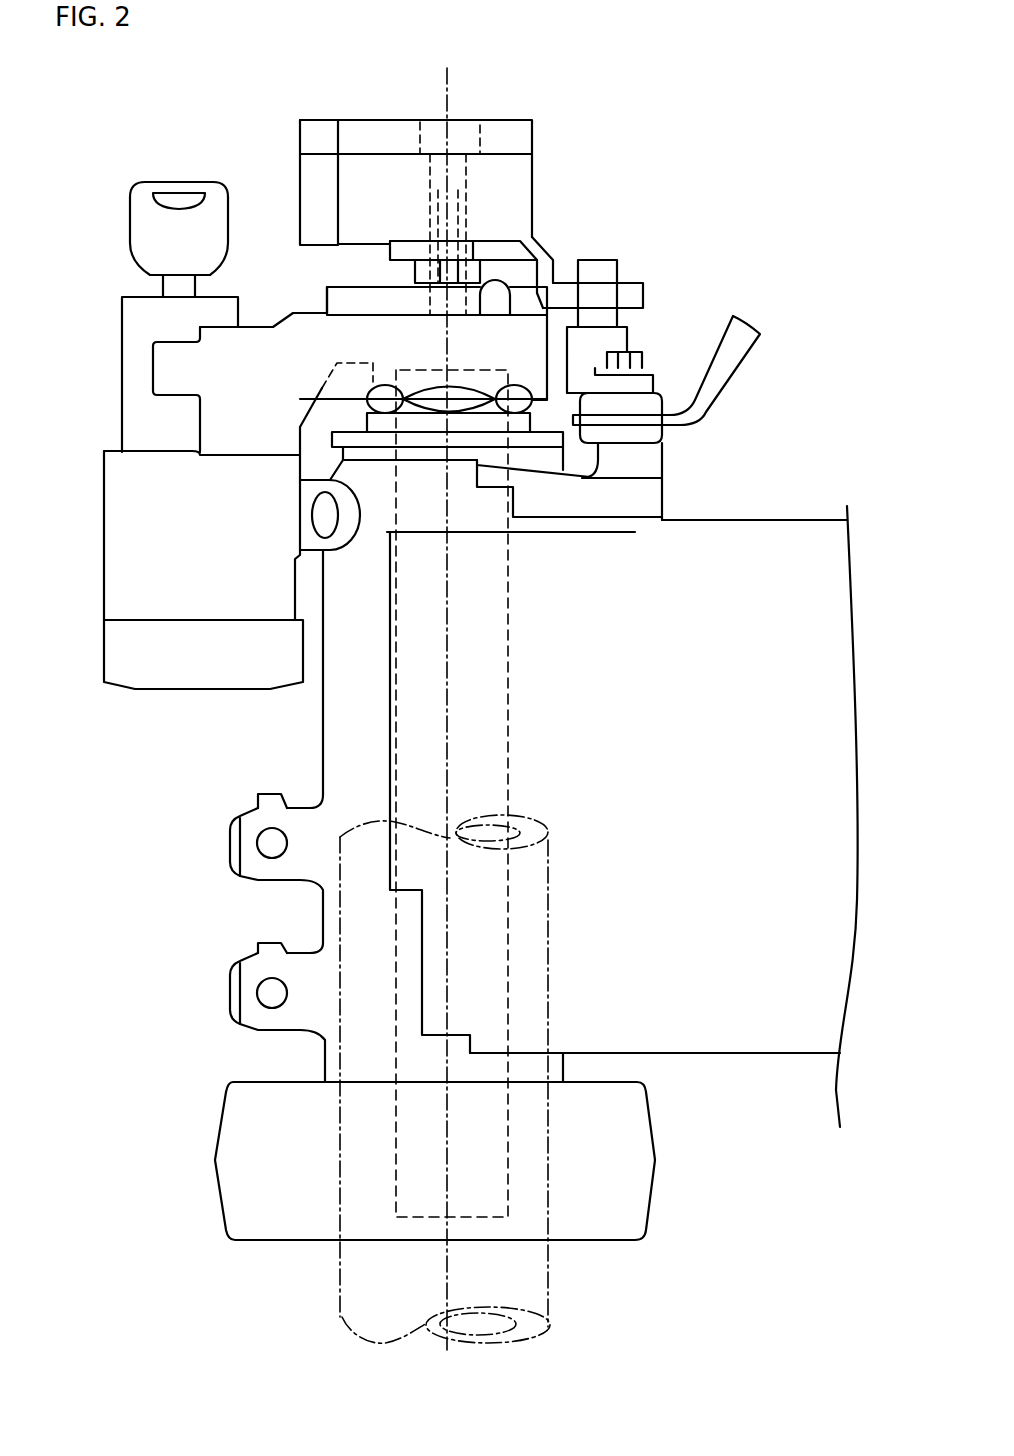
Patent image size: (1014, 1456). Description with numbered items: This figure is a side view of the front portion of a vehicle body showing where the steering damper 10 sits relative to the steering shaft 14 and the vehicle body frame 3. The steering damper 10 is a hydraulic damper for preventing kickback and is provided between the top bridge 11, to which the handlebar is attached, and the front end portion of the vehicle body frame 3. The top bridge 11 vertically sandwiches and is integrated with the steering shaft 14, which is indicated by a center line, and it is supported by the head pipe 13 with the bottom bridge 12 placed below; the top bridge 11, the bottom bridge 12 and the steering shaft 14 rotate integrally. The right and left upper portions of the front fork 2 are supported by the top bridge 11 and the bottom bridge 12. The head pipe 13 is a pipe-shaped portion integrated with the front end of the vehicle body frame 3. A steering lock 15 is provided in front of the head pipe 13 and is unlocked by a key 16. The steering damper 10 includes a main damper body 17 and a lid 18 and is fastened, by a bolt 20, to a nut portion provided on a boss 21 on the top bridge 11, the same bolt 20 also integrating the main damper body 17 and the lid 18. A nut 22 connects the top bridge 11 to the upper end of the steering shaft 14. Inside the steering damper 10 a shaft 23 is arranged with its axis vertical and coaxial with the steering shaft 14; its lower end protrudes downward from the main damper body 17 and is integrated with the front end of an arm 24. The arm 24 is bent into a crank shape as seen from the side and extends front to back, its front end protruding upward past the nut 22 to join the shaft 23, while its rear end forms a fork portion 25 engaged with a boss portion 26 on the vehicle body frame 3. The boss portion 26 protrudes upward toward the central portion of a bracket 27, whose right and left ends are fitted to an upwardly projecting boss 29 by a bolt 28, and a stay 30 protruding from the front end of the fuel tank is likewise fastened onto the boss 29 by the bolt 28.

The front fork 2 is at (357, 1269).
The vehicle body frame 3 is at (816, 736).
The steering damper 10 is at (321, 100).
The top bridge 11 is at (180, 370).
The bottom bridge 12 is at (233, 1152).
The head pipe 13 is at (340, 750).
The steering shaft 14 is at (508, 697).
The steering lock 15 is at (120, 576).
The key 16 is at (165, 180).
The main damper body 17 is at (300, 197).
The lid 18 is at (310, 138).
The bolt 20 is at (480, 135).
The boss 21 is at (400, 262).
The nut 22 is at (510, 293).
The shaft 23 is at (468, 200).
The arm 24 is at (495, 252).
The fork portion 25 is at (633, 295).
The boss portion 26 is at (595, 260).
The bracket 27 is at (655, 383).
The bolt 28 is at (633, 352).
The upwardly projecting boss 29 is at (653, 458).
The stay 30 is at (723, 383).